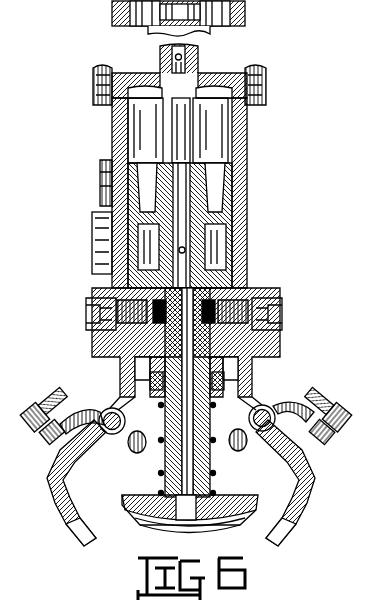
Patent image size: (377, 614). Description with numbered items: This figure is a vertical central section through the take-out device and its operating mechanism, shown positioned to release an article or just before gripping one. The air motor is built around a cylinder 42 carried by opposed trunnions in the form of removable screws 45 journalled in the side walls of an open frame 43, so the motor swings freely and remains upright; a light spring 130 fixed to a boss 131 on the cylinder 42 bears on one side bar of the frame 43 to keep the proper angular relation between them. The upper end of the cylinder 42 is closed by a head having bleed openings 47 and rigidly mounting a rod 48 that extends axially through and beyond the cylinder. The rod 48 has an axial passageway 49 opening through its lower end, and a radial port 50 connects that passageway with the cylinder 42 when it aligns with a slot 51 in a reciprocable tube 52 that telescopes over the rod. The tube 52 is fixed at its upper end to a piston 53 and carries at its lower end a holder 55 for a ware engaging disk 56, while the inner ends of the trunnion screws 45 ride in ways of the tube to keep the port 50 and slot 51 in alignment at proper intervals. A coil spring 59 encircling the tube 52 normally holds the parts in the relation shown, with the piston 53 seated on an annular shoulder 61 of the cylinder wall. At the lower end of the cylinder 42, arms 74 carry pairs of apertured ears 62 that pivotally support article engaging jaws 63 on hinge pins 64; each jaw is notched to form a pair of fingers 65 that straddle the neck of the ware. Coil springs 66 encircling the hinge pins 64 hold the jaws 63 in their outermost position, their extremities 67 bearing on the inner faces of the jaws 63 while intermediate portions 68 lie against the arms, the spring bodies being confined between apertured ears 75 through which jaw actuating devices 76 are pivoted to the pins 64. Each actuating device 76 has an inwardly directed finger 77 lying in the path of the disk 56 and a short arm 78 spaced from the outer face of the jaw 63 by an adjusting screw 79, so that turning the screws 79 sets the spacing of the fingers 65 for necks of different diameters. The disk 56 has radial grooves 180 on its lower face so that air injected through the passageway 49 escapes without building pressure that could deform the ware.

The apertured ears 75 is at (148, 33).
The bleed openings 47 is at (208, 92).
The rod 48 is at (200, 136).
The cylinder 42 is at (248, 190).
The piston 53 is at (240, 213).
The reciprocable tube 52 is at (226, 236).
The annular shoulder 61 is at (138, 235).
The radial port 50 is at (178, 251).
The slot 51 is at (232, 282).
The boss 131 is at (112, 165).
The light spring 130 is at (94, 213).
The trunnion screws 45 is at (88, 301).
The open frame 43 is at (278, 347).
The intermediate portions 68 is at (150, 385).
The coil springs 66 is at (113, 434).
The finger 77 is at (187, 433).
The apertured ears 62 is at (124, 412).
The arms 74 is at (252, 382).
The article engaging jaws 63 is at (57, 502).
The fingers 65 is at (72, 532).
The hinge pin 64 is at (96, 414).
The adjusting screws 79 is at (38, 404).
The short arms 78 is at (52, 442).
The extremities 67 is at (98, 446).
The jaw actuating devices 76 is at (312, 404).
The coil spring 59 is at (160, 455).
The axial passageway 49 is at (200, 466).
The ware engaging disk 56 is at (240, 520).
The holder 55 is at (130, 514).
The radial grooves 180 is at (146, 526).